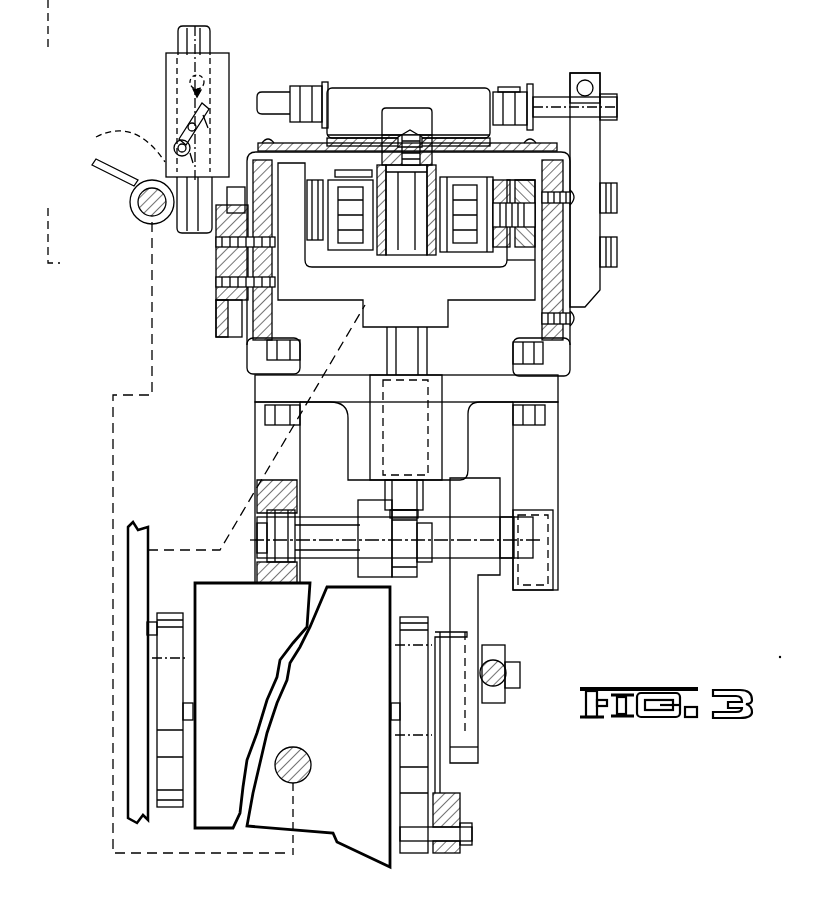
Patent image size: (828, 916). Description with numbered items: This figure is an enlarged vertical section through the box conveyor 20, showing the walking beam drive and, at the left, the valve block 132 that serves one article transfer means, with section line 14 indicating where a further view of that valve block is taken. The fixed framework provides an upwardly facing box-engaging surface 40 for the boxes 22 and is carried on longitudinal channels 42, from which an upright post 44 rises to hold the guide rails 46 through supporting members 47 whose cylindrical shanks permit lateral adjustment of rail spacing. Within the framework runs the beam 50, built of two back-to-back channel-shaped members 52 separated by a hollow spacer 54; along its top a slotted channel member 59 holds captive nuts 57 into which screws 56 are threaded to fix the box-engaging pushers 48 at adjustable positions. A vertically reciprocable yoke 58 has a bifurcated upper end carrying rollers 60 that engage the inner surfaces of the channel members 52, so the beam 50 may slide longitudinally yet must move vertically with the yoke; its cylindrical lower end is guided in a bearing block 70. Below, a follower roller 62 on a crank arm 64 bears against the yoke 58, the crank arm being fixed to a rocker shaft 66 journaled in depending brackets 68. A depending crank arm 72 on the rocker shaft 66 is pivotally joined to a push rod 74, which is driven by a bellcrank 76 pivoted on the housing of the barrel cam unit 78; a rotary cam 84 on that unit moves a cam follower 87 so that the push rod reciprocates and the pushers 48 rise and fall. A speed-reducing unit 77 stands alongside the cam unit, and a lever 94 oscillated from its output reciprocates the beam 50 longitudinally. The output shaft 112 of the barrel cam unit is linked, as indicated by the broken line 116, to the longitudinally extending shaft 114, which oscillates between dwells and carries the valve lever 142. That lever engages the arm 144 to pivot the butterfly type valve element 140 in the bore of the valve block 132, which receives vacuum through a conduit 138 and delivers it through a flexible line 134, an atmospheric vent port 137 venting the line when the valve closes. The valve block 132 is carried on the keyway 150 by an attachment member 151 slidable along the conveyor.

The section line 14- 14 is at (48, 5).
The box conveyor 20 is at (632, 72).
The boxes 22 is at (480, 86).
The box-engaging surface 40 is at (513, 142).
The channels 42 is at (247, 352).
The upright post 44 is at (601, 168).
The guide rails 46 is at (316, 100).
The supporting members 47 is at (272, 92).
The box-engaging pushers 48 is at (380, 112).
The beam 50 is at (465, 262).
The channel-shaped members 52 is at (395, 240).
The spacer 54 is at (410, 255).
The screws 56 is at (410, 130).
The nut 57 is at (432, 140).
The yoke 58 is at (428, 356).
The channel member 59 is at (378, 140).
The rollers 60 is at (355, 176).
The follower roller 62 is at (405, 577).
The crank arm 64 is at (358, 510).
The rocker shaft 66 is at (435, 520).
The depending brackets 68 is at (254, 440).
The bearing block 70 is at (560, 396).
The depending crank arm 72 is at (480, 606).
The push rod 74 is at (506, 652).
The bellcrank 76 is at (465, 797).
The speed-reducing unit 77 is at (262, 637).
The barrel cam unit 78 is at (367, 637).
The rotary cam 84 is at (430, 777).
The cam follower 87 is at (412, 852).
The lever 94 is at (130, 600).
The output shaft 112 is at (300, 758).
The longitudinally extending shaft 114 is at (138, 206).
The broken line 116 is at (113, 418).
The valve block 132 is at (166, 62).
The flexible line 134 is at (178, 41).
The atmospheric vent port 137 is at (208, 62).
The conduit 138 is at (172, 222).
The butterfly type valve element 140 is at (191, 90).
The valve lever 142 is at (112, 182).
The arm 144 is at (180, 130).
The keyway 150 is at (234, 186).
The attachment member 151 is at (216, 335).